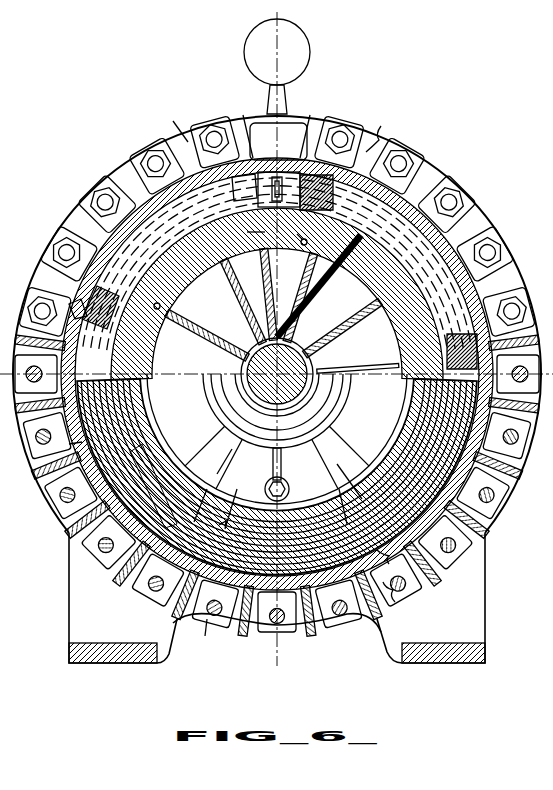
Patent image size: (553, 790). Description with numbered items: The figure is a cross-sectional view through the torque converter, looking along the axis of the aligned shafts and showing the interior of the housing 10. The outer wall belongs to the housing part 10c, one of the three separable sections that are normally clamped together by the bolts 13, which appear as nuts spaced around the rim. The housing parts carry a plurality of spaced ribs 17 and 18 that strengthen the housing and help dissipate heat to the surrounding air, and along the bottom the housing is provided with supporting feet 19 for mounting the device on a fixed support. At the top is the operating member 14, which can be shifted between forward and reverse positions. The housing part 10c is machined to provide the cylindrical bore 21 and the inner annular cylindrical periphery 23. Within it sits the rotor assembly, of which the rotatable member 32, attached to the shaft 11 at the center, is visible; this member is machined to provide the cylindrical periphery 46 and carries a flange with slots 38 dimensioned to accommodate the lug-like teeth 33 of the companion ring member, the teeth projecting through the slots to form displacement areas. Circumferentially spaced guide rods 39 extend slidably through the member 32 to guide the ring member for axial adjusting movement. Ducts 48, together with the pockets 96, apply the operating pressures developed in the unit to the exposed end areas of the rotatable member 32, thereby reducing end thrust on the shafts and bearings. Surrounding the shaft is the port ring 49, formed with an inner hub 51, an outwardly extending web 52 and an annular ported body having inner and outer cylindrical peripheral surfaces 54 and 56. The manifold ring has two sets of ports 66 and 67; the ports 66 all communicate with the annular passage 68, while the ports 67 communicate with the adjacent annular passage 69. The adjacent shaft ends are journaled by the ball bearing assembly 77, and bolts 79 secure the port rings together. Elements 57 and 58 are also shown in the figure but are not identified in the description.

The housing 10 is at (277, 350).
The housing part 10c is at (326, 214).
The shaft 11 is at (277, 409).
The bolts 13 is at (487, 240).
The operating member 14 is at (291, 66).
The ribs 17 is at (277, 530).
The ribs 18 is at (277, 226).
The supporting feet 19 is at (418, 598).
The cylindrical bore 21 is at (172, 126).
The inner annular cylindrical periphery 23 is at (277, 294).
The rotatable member 32 is at (277, 264).
The lug-like teeth 33 is at (174, 212).
The slots 38 is at (45, 295).
The guide rods 39 is at (291, 231).
The cylindrical periphery 46 is at (234, 501).
The ducts 48 is at (244, 232).
The port ring 49 is at (277, 517).
The inner hub 51 is at (267, 411).
The web 52 is at (355, 455).
The inner cylindrical peripheral surface 54 is at (208, 497).
The outer cylindrical peripheral surface 56 is at (200, 637).
The brake shoe 57 is at (267, 296).
The brush holder 58 is at (285, 165).
The ports 66 is at (279, 311).
The ports 67 is at (227, 343).
The annular passage 68 is at (340, 498).
The annular passage 69 is at (397, 599).
The ball bearing assembly 77 is at (231, 461).
The bolts 79 is at (292, 487).
The pockets 96 is at (282, 310).